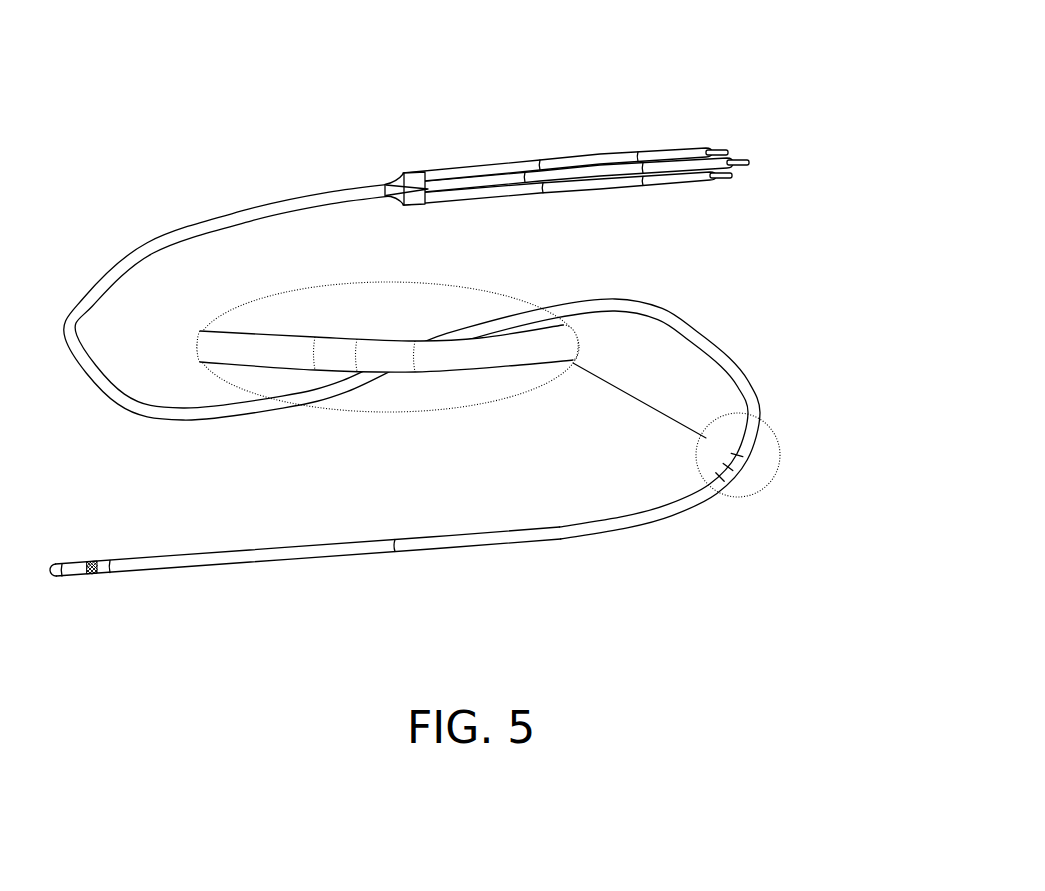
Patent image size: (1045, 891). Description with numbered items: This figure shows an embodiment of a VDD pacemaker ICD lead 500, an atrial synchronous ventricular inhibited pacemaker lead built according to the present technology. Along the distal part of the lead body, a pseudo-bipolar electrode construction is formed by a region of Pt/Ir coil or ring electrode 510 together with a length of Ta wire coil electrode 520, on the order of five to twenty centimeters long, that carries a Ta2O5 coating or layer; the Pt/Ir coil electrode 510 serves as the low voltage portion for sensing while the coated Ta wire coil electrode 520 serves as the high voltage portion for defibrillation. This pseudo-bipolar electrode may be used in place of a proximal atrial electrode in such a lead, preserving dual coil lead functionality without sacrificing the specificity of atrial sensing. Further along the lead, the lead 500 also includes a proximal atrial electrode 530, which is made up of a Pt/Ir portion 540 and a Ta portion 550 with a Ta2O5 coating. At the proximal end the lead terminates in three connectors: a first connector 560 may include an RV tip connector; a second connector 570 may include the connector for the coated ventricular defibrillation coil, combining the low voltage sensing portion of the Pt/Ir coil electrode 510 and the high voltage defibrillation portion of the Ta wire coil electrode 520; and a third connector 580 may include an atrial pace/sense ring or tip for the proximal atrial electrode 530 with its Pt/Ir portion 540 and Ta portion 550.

The VDD pacemaker ICD lead 500 is at (442, 66).
The Pt/Ir coil or ring electrode 510 is at (92, 577).
The Ta wire coil electrode 520 is at (183, 565).
The proximal atrial electrode 530 is at (336, 333).
The Pt/Ir portion 540 is at (330, 360).
The Ta portion 550 is at (445, 365).
The first connector 560 is at (677, 150).
The second connector 570 is at (750, 162).
The third connector 580 is at (685, 185).